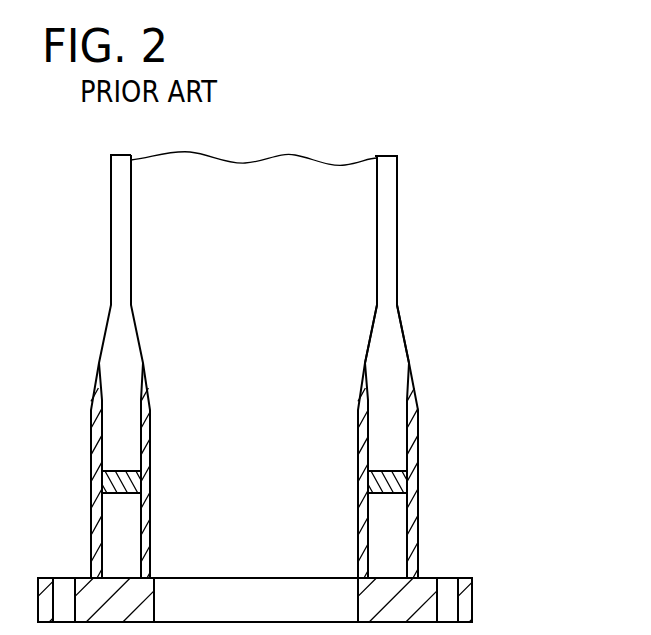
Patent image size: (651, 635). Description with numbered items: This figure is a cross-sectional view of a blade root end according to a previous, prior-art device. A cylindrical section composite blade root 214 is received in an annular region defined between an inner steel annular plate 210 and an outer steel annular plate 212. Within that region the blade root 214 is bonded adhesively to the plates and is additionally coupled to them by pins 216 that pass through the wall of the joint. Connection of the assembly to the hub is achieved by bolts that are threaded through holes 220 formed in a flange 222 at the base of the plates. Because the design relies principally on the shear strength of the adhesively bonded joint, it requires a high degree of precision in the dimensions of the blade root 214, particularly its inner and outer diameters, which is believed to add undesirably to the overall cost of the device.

The inner steel annular plate 210 is at (362, 397).
The outer steel annular plate 212 is at (412, 416).
The composite blade root 214 is at (388, 340).
The pins 216 is at (143, 478).
The holes 220 is at (457, 578).
The flange 222 is at (473, 598).